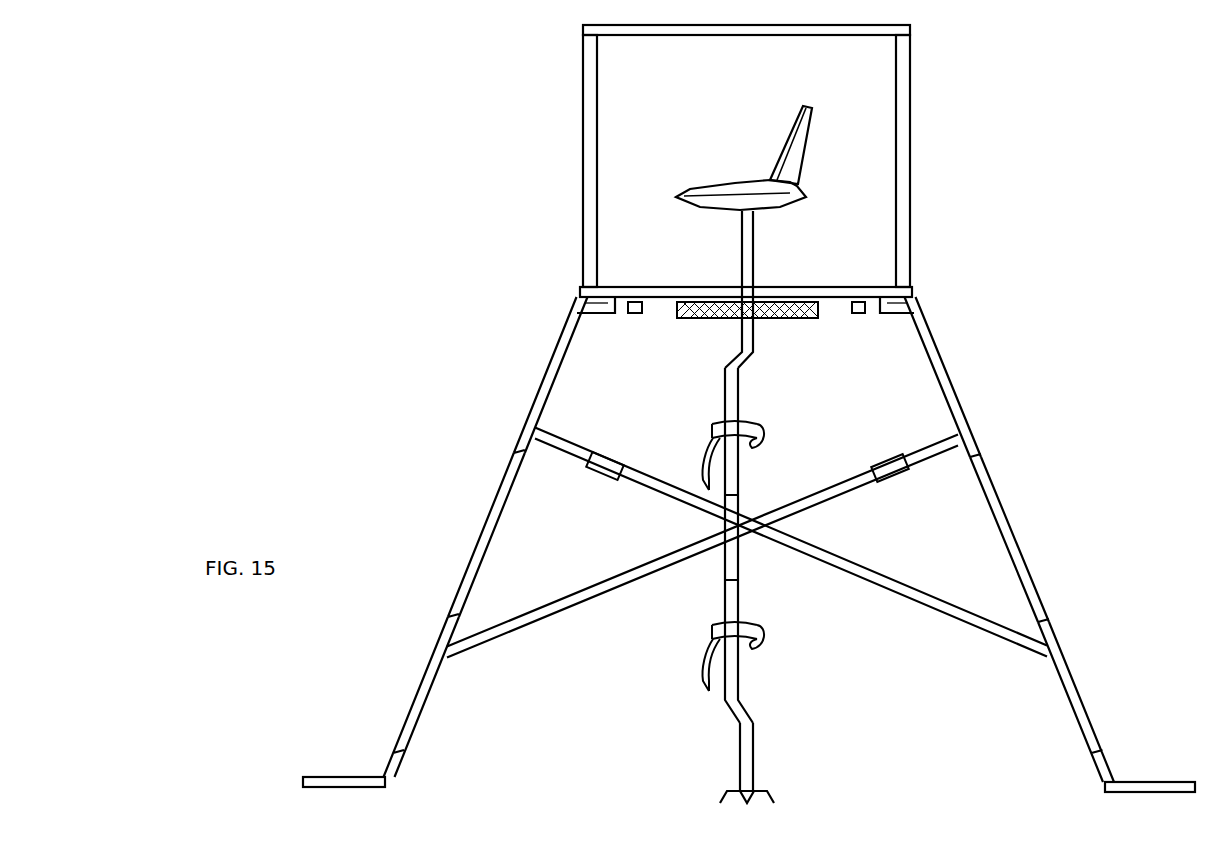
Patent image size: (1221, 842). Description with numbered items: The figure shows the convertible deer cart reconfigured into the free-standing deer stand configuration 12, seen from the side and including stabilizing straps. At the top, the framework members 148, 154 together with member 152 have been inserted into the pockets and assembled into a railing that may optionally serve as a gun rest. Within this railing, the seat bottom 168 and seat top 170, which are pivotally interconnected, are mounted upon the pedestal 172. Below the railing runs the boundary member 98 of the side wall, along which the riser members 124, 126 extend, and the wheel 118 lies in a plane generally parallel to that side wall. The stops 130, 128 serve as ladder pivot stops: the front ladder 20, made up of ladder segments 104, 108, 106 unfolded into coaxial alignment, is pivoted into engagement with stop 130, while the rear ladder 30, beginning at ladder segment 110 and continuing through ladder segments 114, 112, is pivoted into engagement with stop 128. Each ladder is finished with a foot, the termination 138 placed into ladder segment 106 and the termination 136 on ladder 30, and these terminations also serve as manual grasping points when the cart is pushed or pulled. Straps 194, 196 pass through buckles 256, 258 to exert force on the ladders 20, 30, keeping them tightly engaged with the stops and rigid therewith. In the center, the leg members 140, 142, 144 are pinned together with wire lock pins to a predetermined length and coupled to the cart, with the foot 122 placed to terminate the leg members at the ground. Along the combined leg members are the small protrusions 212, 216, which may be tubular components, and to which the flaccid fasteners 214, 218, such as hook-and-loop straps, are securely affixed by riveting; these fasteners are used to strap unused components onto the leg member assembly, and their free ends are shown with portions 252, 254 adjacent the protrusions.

The free-standing deer stand configuration 12 is at (426, 81).
The member 152 is at (704, 30).
The framework member 148 is at (592, 168).
The framework member 154 is at (906, 195).
The boundary member 98 is at (912, 290).
The stop 130 is at (590, 306).
The stop 128 is at (905, 310).
The riser member 124 is at (636, 318).
The riser member 126 is at (858, 317).
The wheel 118 is at (769, 320).
The seat bottom 168 is at (780, 203).
The seat top 170 is at (792, 175).
The pedestal 172 is at (742, 223).
The leg member 140 is at (745, 338).
The leg member 144 is at (745, 565).
The leg member 142 is at (751, 713).
The foot 122 is at (753, 790).
The small protrusion 212 is at (716, 425).
The flaccid fastener 214 is at (712, 433).
The upper strap buckle 252 is at (763, 441).
The small protrusion 216 is at (716, 626).
The flaccid fastener 218 is at (712, 638).
The lower strap buckle 254 is at (763, 643).
The ladder 20 is at (470, 537).
The ladder segment 104 is at (548, 370).
The ladder segment 108 is at (460, 578).
The ladder segment 106 is at (416, 690).
The ladder 30 is at (1010, 539).
The ladder segment 110 is at (962, 396).
The right middle leg segment 114 is at (1021, 540).
The right lower leg segment 112 is at (1068, 695).
The strap 196 is at (878, 580).
The strap 194 is at (545, 616).
The buckle 258 is at (602, 480).
The buckle 256 is at (898, 480).
The termination 138 is at (323, 780).
The termination 136 is at (1140, 781).